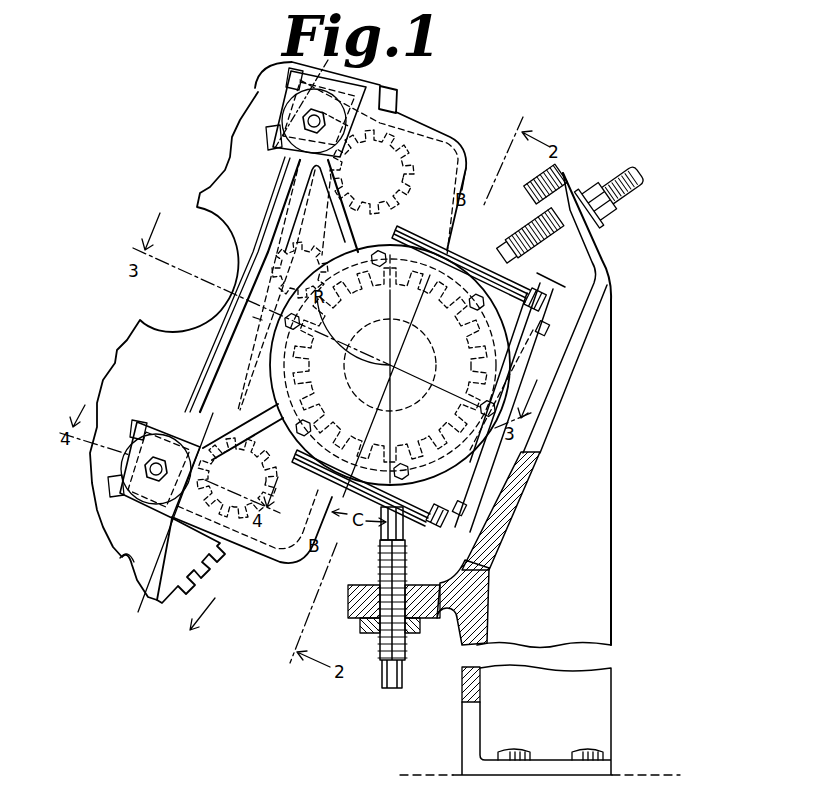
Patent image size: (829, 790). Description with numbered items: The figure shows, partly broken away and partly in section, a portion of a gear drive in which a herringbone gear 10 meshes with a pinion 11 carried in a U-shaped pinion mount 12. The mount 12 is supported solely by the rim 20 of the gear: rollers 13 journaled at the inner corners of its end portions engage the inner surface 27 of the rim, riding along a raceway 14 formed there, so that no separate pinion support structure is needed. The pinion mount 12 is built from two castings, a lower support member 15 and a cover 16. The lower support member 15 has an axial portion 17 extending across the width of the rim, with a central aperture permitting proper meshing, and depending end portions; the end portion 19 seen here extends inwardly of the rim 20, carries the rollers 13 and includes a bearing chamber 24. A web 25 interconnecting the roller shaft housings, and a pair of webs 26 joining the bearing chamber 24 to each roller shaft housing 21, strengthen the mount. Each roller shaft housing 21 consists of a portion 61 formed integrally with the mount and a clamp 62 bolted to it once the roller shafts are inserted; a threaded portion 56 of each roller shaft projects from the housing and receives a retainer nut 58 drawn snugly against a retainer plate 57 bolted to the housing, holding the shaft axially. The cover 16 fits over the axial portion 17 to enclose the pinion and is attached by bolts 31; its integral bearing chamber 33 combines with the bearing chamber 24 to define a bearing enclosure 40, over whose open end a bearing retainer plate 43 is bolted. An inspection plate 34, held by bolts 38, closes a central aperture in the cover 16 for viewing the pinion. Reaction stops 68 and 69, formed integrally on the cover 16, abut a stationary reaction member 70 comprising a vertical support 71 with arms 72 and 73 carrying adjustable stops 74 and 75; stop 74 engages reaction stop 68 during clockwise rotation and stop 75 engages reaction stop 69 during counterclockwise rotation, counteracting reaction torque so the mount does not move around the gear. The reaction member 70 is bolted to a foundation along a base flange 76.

The herringbone gear 10 is at (120, 543).
The pinion 11 is at (472, 242).
The pinion mount 12 is at (447, 132).
The rollers 13 is at (287, 103).
The raceway 14 is at (138, 533).
The lower support member 15 is at (253, 317).
The cover 16 is at (527, 275).
The axial portion 17 is at (467, 183).
The end portion 19 is at (270, 543).
The rim 20 is at (166, 573).
The roller shaft housing 21 is at (293, 112).
The bearing chamber 24 is at (265, 382).
The web 25 is at (223, 358).
The webs 26 is at (352, 196).
The inner surface 27 is at (123, 575).
The bolts 31 is at (545, 300).
The bearing chamber 33 is at (470, 462).
The inspection plate 34 is at (507, 453).
The bolts 38 is at (546, 333).
The bearing enclosure 40 is at (493, 364).
The bearing retainer plate 43 is at (308, 440).
The threaded portion 56 is at (320, 116).
The retainer plate 57 is at (282, 142).
The retainer nut 58 is at (350, 127).
The portion 61 is at (352, 150).
The clamp 62 is at (125, 513).
The reaction stop 68 is at (502, 244).
The reaction stop 69 is at (406, 528).
The stationary reaction member 70 is at (613, 427).
The vertical support 71 is at (596, 527).
The arm 72 is at (604, 238).
The arm 73 is at (438, 612).
The adjustable stop 74 is at (532, 207).
The adjustable stop 75 is at (408, 567).
The base flange 76 is at (603, 767).